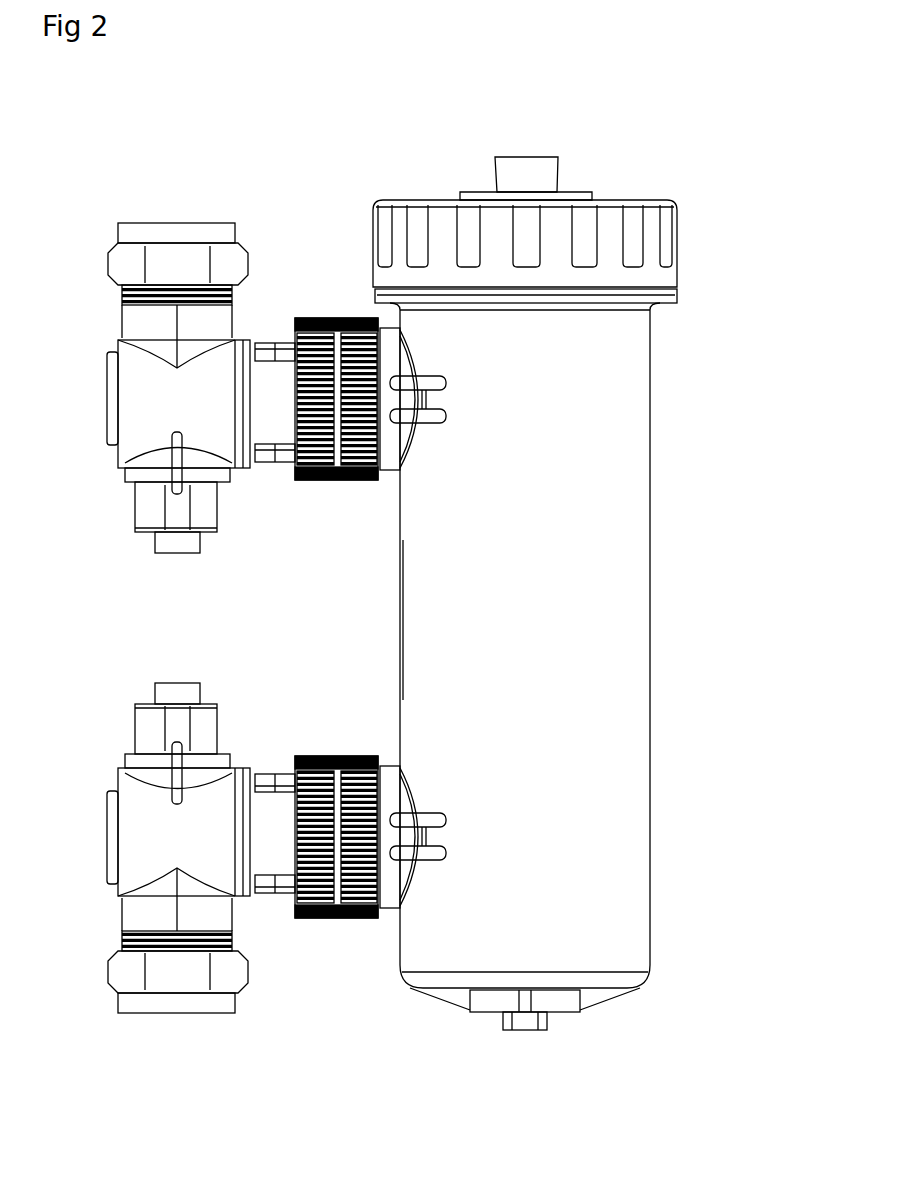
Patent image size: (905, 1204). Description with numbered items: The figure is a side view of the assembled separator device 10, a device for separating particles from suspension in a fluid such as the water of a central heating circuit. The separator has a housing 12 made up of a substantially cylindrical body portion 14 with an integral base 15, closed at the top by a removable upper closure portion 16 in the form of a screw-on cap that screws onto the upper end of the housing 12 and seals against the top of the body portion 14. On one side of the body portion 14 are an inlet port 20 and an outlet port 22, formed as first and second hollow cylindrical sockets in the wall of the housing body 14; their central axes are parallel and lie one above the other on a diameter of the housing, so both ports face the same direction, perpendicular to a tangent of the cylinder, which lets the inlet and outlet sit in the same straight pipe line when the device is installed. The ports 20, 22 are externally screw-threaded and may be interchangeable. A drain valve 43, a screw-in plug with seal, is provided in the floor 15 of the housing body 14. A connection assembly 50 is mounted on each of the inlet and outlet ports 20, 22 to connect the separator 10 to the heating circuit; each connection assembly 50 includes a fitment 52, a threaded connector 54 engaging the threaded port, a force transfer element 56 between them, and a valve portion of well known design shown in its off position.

The separator device 10 is at (657, 91).
The housing 12 is at (623, 636).
The cylindrical body portion 14 is at (623, 392).
The integral base 15 is at (602, 1000).
The upper closure portion 16 is at (660, 276).
The inlet port 20 is at (392, 353).
The outlet port 22 is at (395, 890).
The drain valve 43 is at (524, 1036).
The connection assembly 50 is at (202, 326).
The fitment 52 is at (270, 432).
The threaded connector 54 is at (340, 482).
The force transfer element 56 is at (276, 338).